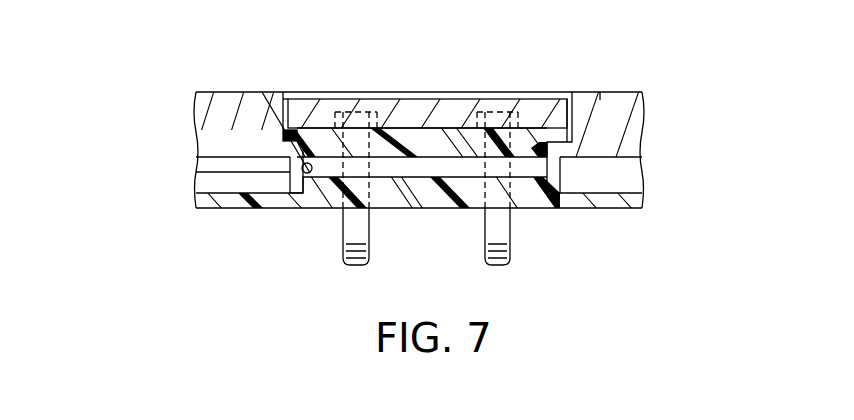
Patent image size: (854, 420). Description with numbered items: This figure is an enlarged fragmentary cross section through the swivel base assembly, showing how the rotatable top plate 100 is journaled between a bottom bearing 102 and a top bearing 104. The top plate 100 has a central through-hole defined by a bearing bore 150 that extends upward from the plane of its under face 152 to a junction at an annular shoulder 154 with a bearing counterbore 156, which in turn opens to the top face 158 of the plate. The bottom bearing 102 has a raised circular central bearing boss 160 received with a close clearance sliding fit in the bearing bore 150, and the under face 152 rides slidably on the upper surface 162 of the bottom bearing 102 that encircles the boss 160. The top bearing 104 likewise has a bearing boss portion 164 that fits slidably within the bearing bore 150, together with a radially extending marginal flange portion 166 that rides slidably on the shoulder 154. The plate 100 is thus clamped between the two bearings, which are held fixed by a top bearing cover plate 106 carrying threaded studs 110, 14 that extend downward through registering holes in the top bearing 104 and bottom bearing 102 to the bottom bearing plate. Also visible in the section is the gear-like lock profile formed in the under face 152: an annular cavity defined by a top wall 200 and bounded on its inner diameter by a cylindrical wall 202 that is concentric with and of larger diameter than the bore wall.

The threaded stud 14 is at (500, 233).
The rotatable top plate 100 is at (197, 144).
The bottom bearing 102 is at (195, 207).
The top bearing 104 is at (430, 137).
The top bearing cover plate 106 is at (538, 100).
The threaded stud 110 is at (340, 230).
The bearing bore 150 is at (285, 140).
The under face 152 is at (600, 203).
The annular shoulder 154 is at (560, 138).
The bearing counterbore 156 is at (288, 92).
The top face 158 is at (610, 92).
The central bearing boss 160 is at (300, 172).
The upper surface 162 is at (212, 193).
The bearing boss portion 164 is at (552, 147).
The marginal flange portion 166 is at (283, 133).
The top wall 200 is at (196, 171).
The cylindrical wall 202 is at (245, 160).